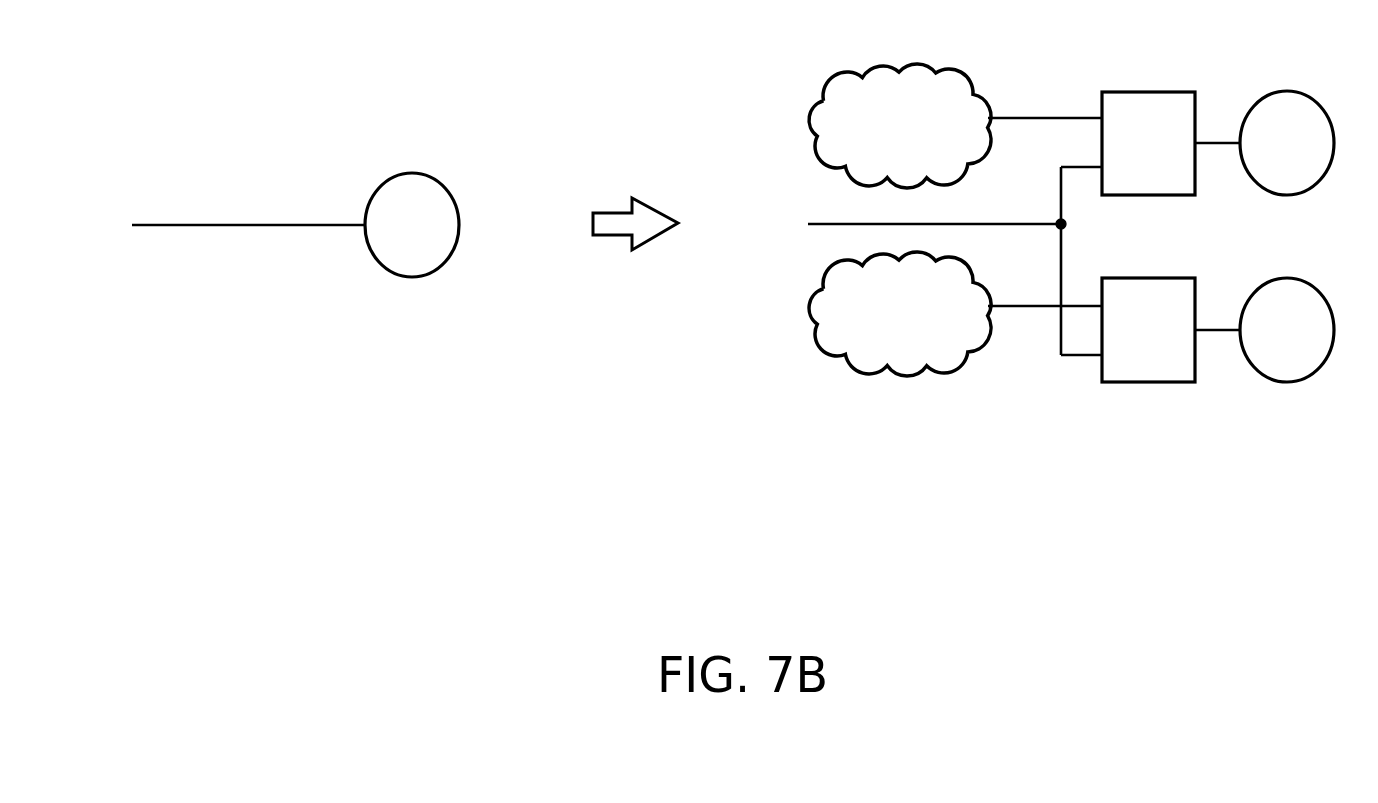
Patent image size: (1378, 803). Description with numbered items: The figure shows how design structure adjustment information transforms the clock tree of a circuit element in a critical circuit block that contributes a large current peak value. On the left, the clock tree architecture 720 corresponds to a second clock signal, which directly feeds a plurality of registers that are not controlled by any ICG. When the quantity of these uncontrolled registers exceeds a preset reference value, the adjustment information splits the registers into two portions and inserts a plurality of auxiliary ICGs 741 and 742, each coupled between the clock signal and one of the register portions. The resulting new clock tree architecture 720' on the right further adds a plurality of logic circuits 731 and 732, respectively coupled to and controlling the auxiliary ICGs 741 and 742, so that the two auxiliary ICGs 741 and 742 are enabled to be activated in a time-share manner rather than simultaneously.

The clock tree architecture 720 is at (280, 341).
The new clock tree architecture 720' is at (1056, 279).
The logic circuit 731 is at (942, 175).
The logic circuit 732 is at (942, 363).
The auxiliary ICG 741 is at (1150, 92).
The auxiliary ICG 742 is at (1150, 278).